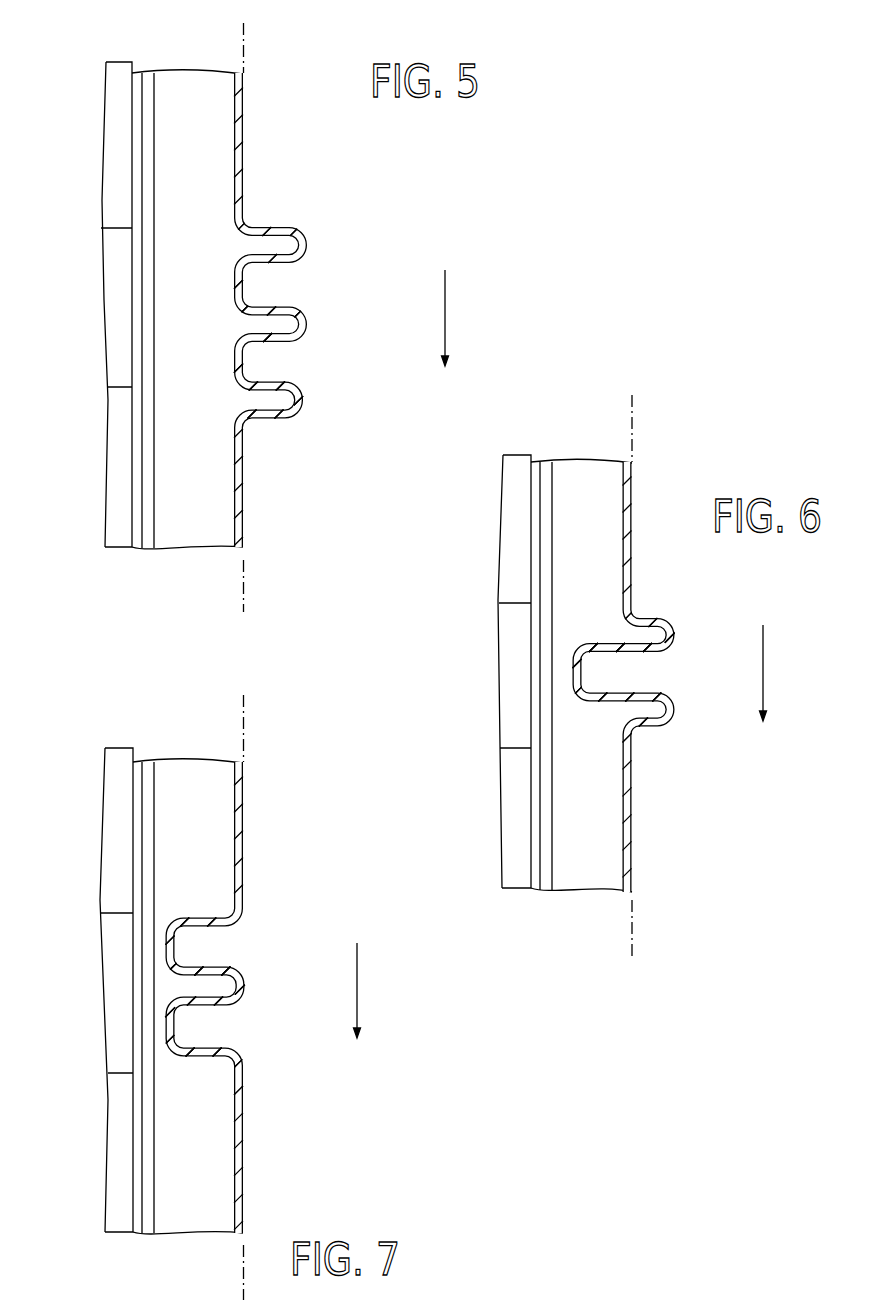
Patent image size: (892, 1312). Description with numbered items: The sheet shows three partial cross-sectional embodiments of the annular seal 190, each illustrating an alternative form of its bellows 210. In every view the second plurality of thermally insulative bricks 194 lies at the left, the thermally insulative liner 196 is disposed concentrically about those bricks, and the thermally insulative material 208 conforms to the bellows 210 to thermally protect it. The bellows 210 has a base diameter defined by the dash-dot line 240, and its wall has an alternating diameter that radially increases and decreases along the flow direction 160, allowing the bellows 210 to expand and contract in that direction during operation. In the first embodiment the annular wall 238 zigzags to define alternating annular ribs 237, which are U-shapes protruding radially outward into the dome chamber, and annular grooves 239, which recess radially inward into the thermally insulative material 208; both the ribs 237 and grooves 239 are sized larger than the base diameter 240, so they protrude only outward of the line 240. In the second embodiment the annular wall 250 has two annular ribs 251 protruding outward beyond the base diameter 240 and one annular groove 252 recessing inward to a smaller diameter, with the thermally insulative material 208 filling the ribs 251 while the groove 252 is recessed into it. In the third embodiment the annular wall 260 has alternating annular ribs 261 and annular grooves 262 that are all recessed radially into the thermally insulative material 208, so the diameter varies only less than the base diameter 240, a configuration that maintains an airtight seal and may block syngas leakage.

In FIG. 5, the flow direction 160 is at (445, 315).
In FIG. 6, the flow direction 160 is at (763, 668).
In FIG. 7, the flow direction 160 is at (357, 988).
In FIG. 5, the annular seal 190 is at (313, 175).
In FIG. 6, the annular seal 190 is at (692, 820).
In FIG. 7, the annular seal 190 is at (303, 1163).
In FIG. 5, the second plurality of thermally insulative bricks 194 is at (116, 325).
In FIG. 6, the second plurality of thermally insulative bricks 194 is at (513, 678).
In FIG. 7, the second plurality of thermally insulative bricks 194 is at (117, 1010).
In FIG. 5, the thermally insulative liner 196 is at (147, 107).
In FIG. 6, the thermally insulative liner 196 is at (545, 478).
In FIG. 7, the thermally insulative liner 196 is at (147, 790).
In FIG. 5, the thermally insulative material 208 is at (173, 482).
In FIG. 6, the thermally insulative material 208 is at (573, 827).
In FIG. 7, the thermally insulative material 208 is at (175, 1170).
In FIG. 5, the bellows 210 is at (312, 232).
In FIG. 6, the bellows 210 is at (643, 735).
In FIG. 7, the bellows 210 is at (255, 1078).
In FIG. 5, the annular ribs 237 is at (307, 332).
In FIG. 5, the annular wall 238 is at (308, 318).
In FIG. 5, the annular grooves 239 is at (245, 363).
In FIG. 5, the base diameter line 240 is at (244, 38).
In FIG. 6, the base diameter line 240 is at (633, 428).
In FIG. 7, the base diameter line 240 is at (244, 728).
In FIG. 6, the annular wall 250 is at (667, 612).
In FIG. 6, the annular ribs 251 is at (677, 638).
In FIG. 6, the annular groove 252 is at (582, 672).
In FIG. 7, the annular wall 260 is at (247, 903).
In FIG. 7, the annular ribs 261 is at (248, 983).
In FIG. 7, the annular grooves 262 is at (178, 938).